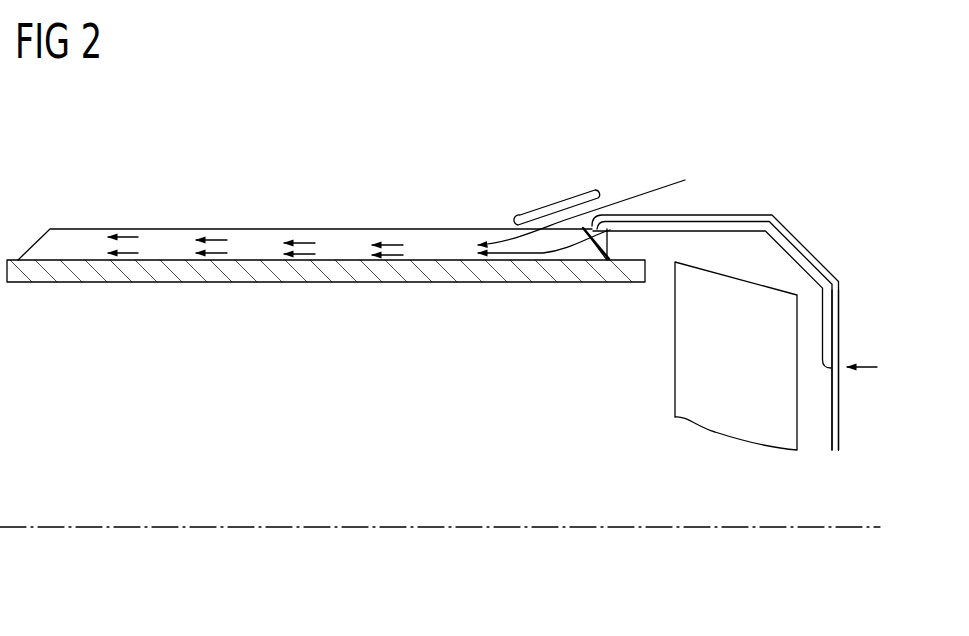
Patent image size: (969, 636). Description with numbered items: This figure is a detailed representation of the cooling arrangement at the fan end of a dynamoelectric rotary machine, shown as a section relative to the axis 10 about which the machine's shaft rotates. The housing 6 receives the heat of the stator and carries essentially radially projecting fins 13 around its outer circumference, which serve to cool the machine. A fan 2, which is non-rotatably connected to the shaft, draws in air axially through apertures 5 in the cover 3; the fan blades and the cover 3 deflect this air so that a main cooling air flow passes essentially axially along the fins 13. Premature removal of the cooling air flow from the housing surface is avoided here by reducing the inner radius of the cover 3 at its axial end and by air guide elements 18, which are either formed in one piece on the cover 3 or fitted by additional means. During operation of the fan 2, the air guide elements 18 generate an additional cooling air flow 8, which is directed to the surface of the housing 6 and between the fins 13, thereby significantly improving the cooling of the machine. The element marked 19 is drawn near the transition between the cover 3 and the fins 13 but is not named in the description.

The fan 2 is at (675, 358).
The cover 3 is at (806, 240).
The apertures 5 is at (841, 343).
The housing 6 is at (257, 281).
The additional cooling air flow 8 is at (637, 197).
The axis 10 is at (829, 530).
The fins 13 is at (72, 244).
The air guide elements 18 is at (547, 207).
The sealing lip / wedge 19 is at (593, 283).